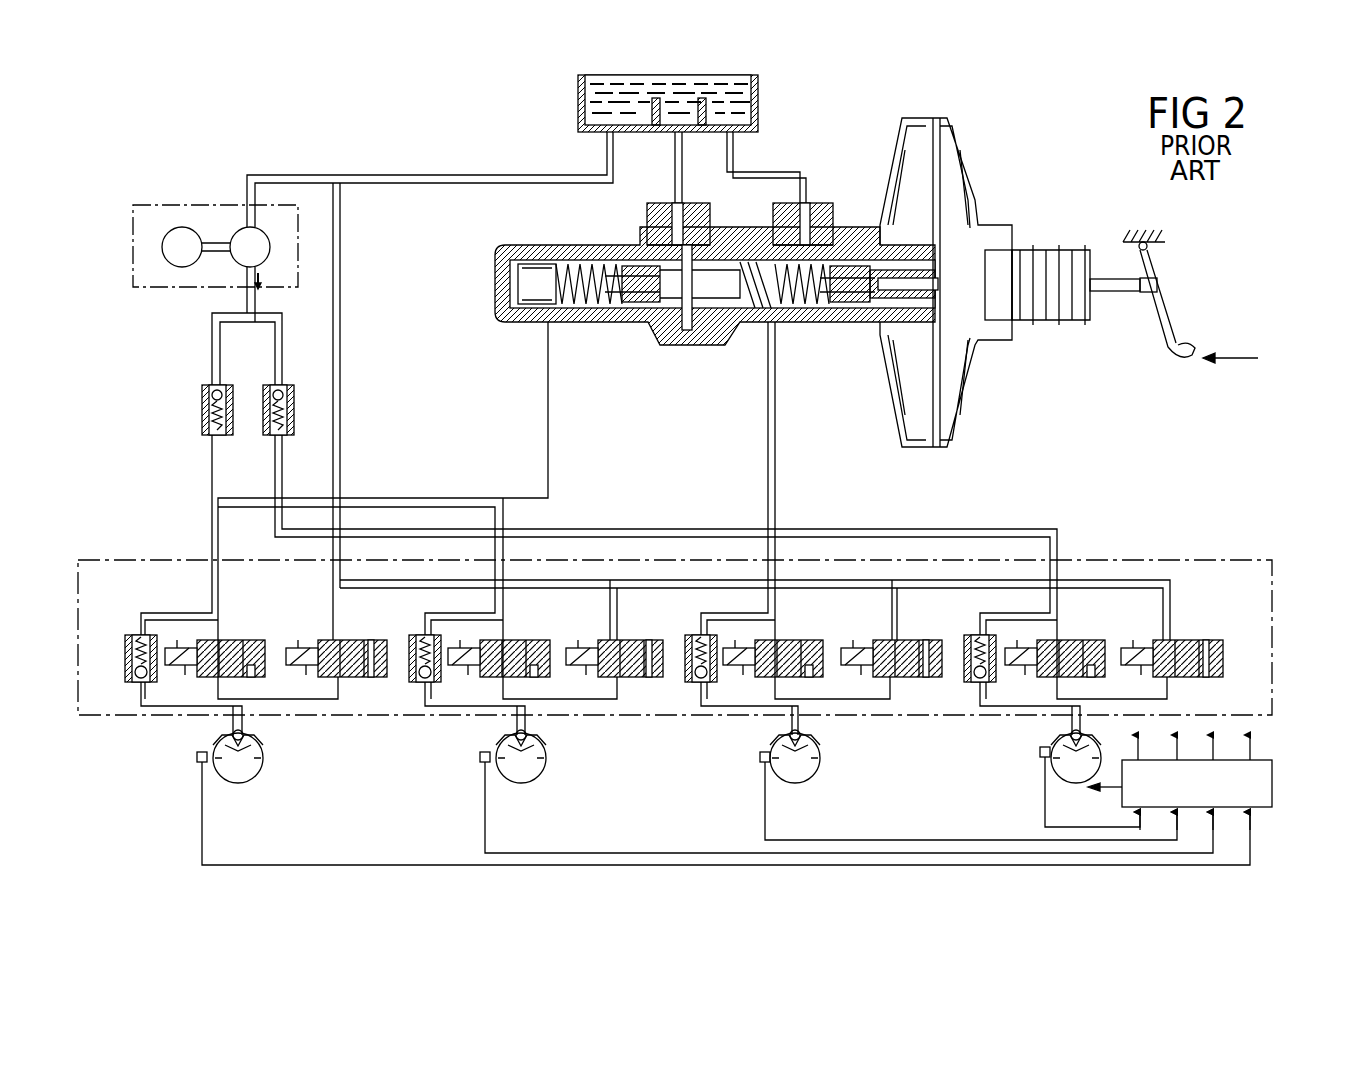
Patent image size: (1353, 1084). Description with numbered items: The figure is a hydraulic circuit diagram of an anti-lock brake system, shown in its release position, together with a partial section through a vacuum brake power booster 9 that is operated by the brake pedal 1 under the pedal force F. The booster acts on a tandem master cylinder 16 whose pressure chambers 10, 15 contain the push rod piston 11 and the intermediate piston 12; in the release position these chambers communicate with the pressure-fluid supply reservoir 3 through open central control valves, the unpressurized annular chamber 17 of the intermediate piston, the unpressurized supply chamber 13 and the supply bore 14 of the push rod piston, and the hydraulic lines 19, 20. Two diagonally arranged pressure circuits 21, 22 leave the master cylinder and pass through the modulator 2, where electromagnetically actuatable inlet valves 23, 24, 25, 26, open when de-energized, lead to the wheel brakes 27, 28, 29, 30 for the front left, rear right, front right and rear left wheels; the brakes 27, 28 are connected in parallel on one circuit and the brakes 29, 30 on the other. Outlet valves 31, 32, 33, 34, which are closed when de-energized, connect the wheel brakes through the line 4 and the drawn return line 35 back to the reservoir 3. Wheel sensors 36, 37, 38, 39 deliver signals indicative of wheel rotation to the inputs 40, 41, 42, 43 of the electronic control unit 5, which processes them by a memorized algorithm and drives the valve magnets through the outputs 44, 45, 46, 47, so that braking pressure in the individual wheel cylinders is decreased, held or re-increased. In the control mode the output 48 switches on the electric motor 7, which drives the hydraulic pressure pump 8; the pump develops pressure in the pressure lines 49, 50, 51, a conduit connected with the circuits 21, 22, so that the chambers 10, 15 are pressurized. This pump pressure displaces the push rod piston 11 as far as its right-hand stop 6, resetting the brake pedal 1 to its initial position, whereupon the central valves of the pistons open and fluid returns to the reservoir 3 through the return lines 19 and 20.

The brake pedal 1 is at (1168, 358).
The modulator 2 is at (112, 558).
The pressure-fluid supply reservoir 3 is at (578, 100).
The line 4 is at (340, 472).
The electronic control unit 5 is at (1197, 783).
The right-hand stop 6 is at (888, 340).
The electric motor 7 is at (162, 247).
The hydraulic pressure pump 8 is at (270, 247).
The vacuum brake power booster 9 is at (978, 175).
The pressure chamber 10 is at (782, 322).
The push rod piston 11 is at (840, 322).
The intermediate piston 12 is at (634, 310).
The supply chamber 13 is at (868, 330).
The supply bore 14 is at (835, 240).
The pressure chamber 15 is at (570, 322).
The tandem master cylinder 16 is at (741, 325).
The annular chamber 17 is at (668, 330).
The hydraulic line 19 is at (675, 160).
The hydraulic line 20 is at (733, 158).
The pressure circuit 21 is at (548, 468).
The pressure circuit 22 is at (775, 470).
The inlet valve 23 is at (238, 640).
The inlet valve 24 is at (522, 640).
The inlet valve 25 is at (790, 640).
The inlet valve 26 is at (1078, 640).
The wheel brake 27 is at (238, 783).
The wheel brake 28 is at (521, 783).
The wheel brake 29 is at (798, 783).
The wheel brake 30 is at (1074, 783).
The outlet valve 31 is at (352, 640).
The outlet valve 32 is at (632, 640).
The outlet valve 33 is at (910, 640).
The outlet valve 34 is at (1190, 640).
The return line 35 is at (673, 584).
The sensor 36 is at (197, 757).
The sensor 37 is at (480, 760).
The sensor 38 is at (760, 757).
The sensor 39 is at (1040, 752).
The input 40 is at (1142, 815).
The input 41 is at (1180, 815).
The input 42 is at (1216, 815).
The input 43 is at (1256, 815).
The output 44 is at (1142, 755).
The output 45 is at (1180, 755).
The output 46 is at (1216, 755).
The output 47 is at (1255, 755).
The output 48 is at (1120, 793).
The pressure line 49 is at (247, 295).
The pressure line 50 is at (212, 463).
The pressure line 51 is at (277, 470).
The pedal force F is at (1230, 346).